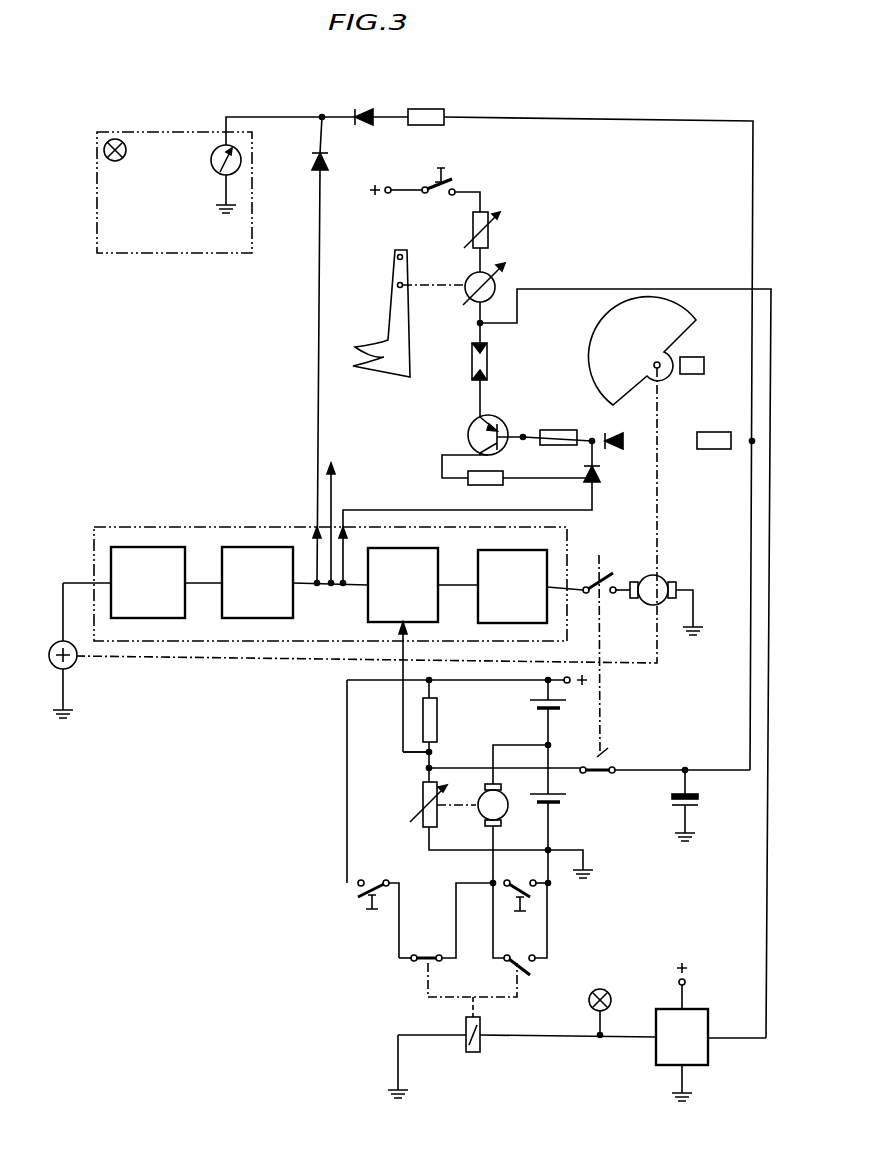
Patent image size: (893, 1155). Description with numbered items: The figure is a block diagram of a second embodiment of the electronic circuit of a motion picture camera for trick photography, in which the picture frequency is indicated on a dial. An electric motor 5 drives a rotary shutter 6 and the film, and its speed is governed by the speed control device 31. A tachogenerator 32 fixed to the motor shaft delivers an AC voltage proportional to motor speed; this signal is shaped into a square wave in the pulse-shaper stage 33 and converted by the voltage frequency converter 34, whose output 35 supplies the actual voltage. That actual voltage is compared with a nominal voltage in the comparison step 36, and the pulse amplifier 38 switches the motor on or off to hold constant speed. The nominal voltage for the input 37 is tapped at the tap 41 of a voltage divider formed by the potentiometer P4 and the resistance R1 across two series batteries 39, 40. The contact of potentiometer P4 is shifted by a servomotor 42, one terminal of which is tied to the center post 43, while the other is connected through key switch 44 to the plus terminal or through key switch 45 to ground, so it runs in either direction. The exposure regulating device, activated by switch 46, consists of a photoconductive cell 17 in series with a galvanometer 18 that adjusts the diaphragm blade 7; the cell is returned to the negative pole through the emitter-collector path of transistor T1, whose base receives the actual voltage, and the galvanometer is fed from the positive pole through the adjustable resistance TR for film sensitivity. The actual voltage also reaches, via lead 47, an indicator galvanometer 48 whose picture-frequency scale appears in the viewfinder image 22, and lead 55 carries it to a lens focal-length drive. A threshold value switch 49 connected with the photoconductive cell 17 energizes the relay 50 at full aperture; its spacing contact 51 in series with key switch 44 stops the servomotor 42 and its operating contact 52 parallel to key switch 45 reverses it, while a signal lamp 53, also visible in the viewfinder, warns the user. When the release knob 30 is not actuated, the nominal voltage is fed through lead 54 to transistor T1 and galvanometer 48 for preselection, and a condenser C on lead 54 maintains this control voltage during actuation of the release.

The electric motor 5 is at (668, 581).
The rotary shutter 6 is at (603, 374).
The diaphragm blade 7 is at (392, 318).
The photoconductive cell 17 is at (471, 356).
The galvanometer 18 is at (466, 283).
The viewfinder image 22 is at (158, 255).
The release knob 30 is at (589, 585).
The speed control device 31 is at (166, 527).
The tachogenerator 32 is at (53, 645).
The pulse-shaper stage 33 is at (157, 599).
The voltage frequency converter 34 is at (267, 599).
The output 35 is at (298, 589).
The comparison step 36 is at (413, 598).
The input 37 is at (408, 626).
The pulse amplifier 38 is at (525, 599).
The battery 39 is at (560, 704).
The battery 40 is at (560, 800).
The tap 41 is at (403, 741).
The servomotor 42 is at (504, 813).
The center post 43 is at (552, 746).
The key switch 44 is at (378, 905).
The key switch 45 is at (521, 882).
The switch 46 is at (434, 180).
The lead 47 is at (316, 445).
The galvanometer 48 is at (240, 157).
The threshold value switch 49 is at (688, 1051).
The relay 50 is at (522, 1030).
The spacing contact 51 is at (437, 945).
The operating contact 52 is at (520, 929).
The signal lamp 53 is at (104, 150).
The lead 54 is at (751, 741).
The lead 55 is at (332, 472).
The adjustable resistance TR is at (473, 224).
The transistor T1 is at (468, 435).
The resistance R1 is at (437, 720).
The potentiometer P4 is at (421, 803).
The condenser C is at (699, 803).